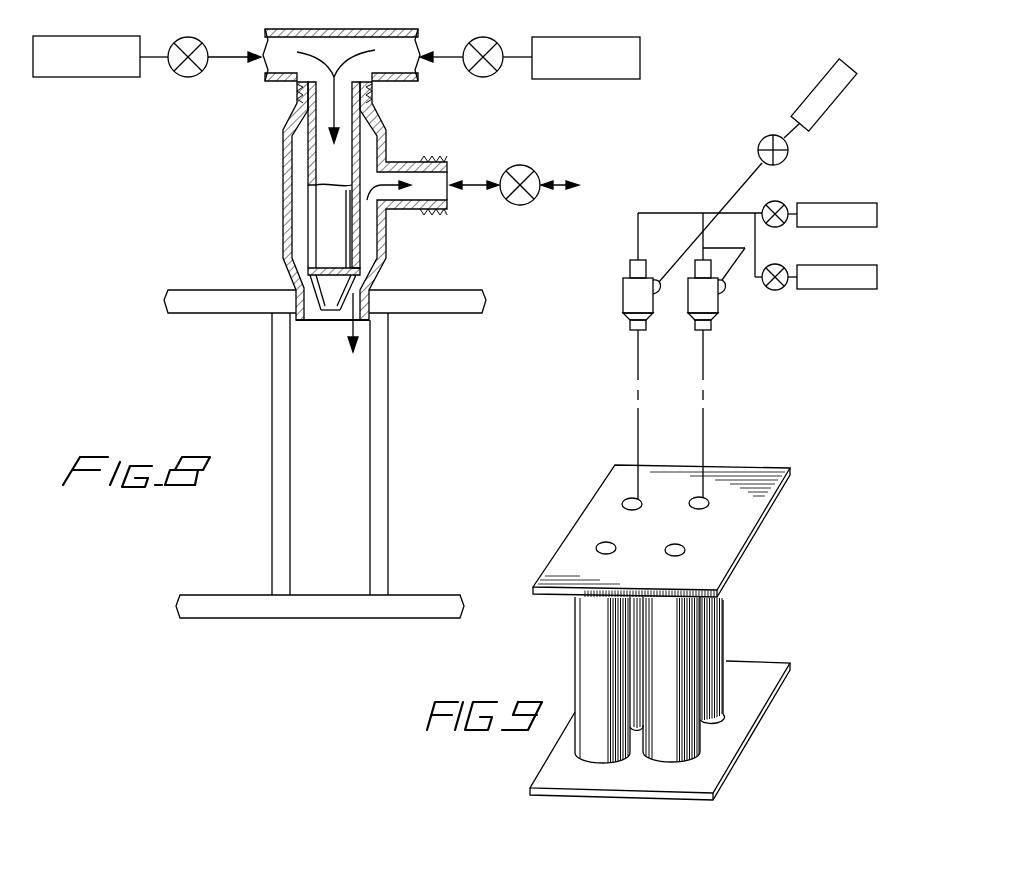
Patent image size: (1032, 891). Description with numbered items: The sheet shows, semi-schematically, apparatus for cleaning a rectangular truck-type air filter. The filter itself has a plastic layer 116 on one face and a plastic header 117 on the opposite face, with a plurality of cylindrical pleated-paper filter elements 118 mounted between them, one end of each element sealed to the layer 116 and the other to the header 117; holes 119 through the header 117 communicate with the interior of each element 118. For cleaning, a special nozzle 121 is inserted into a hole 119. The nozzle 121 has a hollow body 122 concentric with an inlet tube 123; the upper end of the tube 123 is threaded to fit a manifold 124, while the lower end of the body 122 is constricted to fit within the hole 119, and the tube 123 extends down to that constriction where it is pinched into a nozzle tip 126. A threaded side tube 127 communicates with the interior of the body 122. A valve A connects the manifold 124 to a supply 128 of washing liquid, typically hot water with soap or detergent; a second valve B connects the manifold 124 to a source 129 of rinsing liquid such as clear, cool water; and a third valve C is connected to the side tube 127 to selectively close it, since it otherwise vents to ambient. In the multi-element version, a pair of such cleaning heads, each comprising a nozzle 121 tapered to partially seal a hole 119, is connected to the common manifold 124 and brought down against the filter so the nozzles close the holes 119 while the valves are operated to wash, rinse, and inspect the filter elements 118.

In FIG. 8, the plastic layer 116 is at (418, 597).
In FIG. 9, the plastic layer 116 is at (660, 730).
In FIG. 8, the plastic header 117 is at (415, 291).
In FIG. 9, the plastic header 117 is at (782, 452).
In FIG. 8, the cylindrical filter elements 118 is at (388, 455).
In FIG. 9, the cylindrical filter elements 118 is at (723, 632).
In FIG. 9, the holes 119 is at (708, 499).
In FIG. 8, the nozzle 121 is at (275, 206).
In FIG. 9, the nozzle 121 is at (626, 313).
In FIG. 8, the hollow body 122 is at (283, 152).
In FIG. 8, the inlet tube 123 is at (372, 133).
In FIG. 8, the manifold 124 is at (353, 29).
In FIG. 9, the manifold 124 is at (683, 195).
In FIG. 8, the nozzle tip 126 is at (318, 307).
In FIG. 8, the threaded side tube 127 is at (424, 212).
In FIG. 8, the supply of washing liquid 128 is at (640, 47).
In FIG. 9, the supply of washing liquid 128 is at (866, 192).
In FIG. 8, the source of rinsing liquid 129 is at (80, 77).
In FIG. 9, the source of rinsing liquid 129 is at (840, 289).
In FIG. 8, the valve A is at (497, 42).
In FIG. 9, the valve A is at (779, 202).
In FIG. 8, the second valve B is at (201, 45).
In FIG. 9, the second valve B is at (778, 290).
In FIG. 8, the third valve C is at (535, 170).
In FIG. 9, the third valve C is at (752, 143).